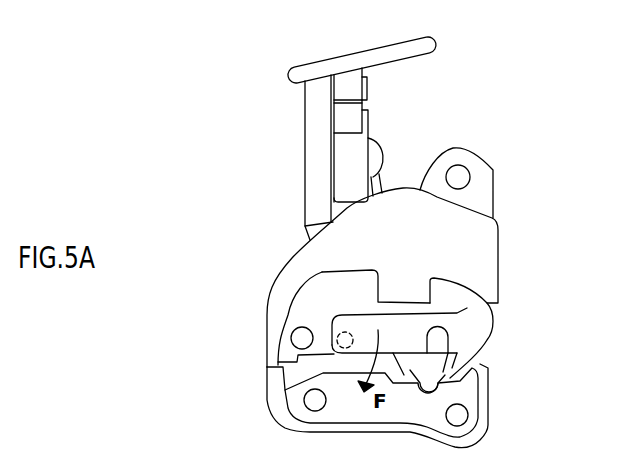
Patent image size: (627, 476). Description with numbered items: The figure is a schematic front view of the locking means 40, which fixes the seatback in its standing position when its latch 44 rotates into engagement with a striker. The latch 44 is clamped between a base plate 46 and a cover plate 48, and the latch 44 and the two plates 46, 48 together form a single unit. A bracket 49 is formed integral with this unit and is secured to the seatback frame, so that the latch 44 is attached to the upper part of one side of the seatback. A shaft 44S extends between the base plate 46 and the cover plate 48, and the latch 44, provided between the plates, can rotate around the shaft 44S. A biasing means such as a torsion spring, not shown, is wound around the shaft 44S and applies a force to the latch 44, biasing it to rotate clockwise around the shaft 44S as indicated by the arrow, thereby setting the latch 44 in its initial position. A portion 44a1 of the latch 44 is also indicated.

The locking means 40 is at (205, 188).
The bracket 49 is at (317, 150).
The latch 44 is at (482, 332).
The engaging portion of latch member 44a1 is at (477, 352).
The shaft 44S is at (302, 338).
The cover plate 48 is at (347, 413).
The base plate 46 is at (408, 432).